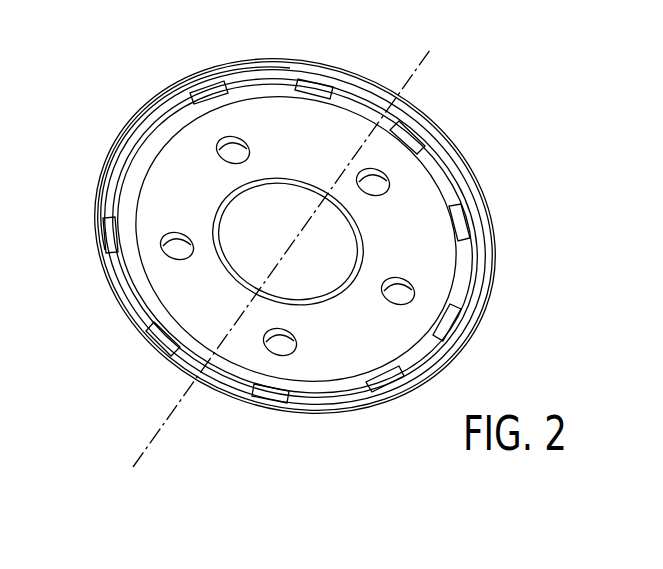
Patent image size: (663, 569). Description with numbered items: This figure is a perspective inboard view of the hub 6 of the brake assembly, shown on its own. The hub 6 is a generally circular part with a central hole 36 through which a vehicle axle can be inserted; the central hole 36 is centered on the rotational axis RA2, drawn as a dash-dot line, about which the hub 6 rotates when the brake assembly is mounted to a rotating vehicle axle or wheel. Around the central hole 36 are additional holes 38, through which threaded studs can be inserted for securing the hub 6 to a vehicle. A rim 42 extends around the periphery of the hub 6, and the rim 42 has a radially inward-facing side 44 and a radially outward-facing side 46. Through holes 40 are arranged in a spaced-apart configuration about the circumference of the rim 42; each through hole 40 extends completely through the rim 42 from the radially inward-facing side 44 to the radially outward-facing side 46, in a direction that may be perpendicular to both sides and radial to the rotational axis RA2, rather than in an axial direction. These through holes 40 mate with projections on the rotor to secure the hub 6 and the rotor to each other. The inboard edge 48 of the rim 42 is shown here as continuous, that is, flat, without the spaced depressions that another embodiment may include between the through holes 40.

The hub 6 is at (521, 206).
The central hole 36 is at (256, 240).
The additional holes 38 is at (378, 196).
The through holes 40 is at (309, 96).
The rim 42 is at (130, 307).
The radially inward-facing side 44 is at (263, 78).
The radially outward-facing side 46 is at (110, 206).
The inboard edge 48 is at (152, 113).
The rotational axis RA2 is at (284, 266).